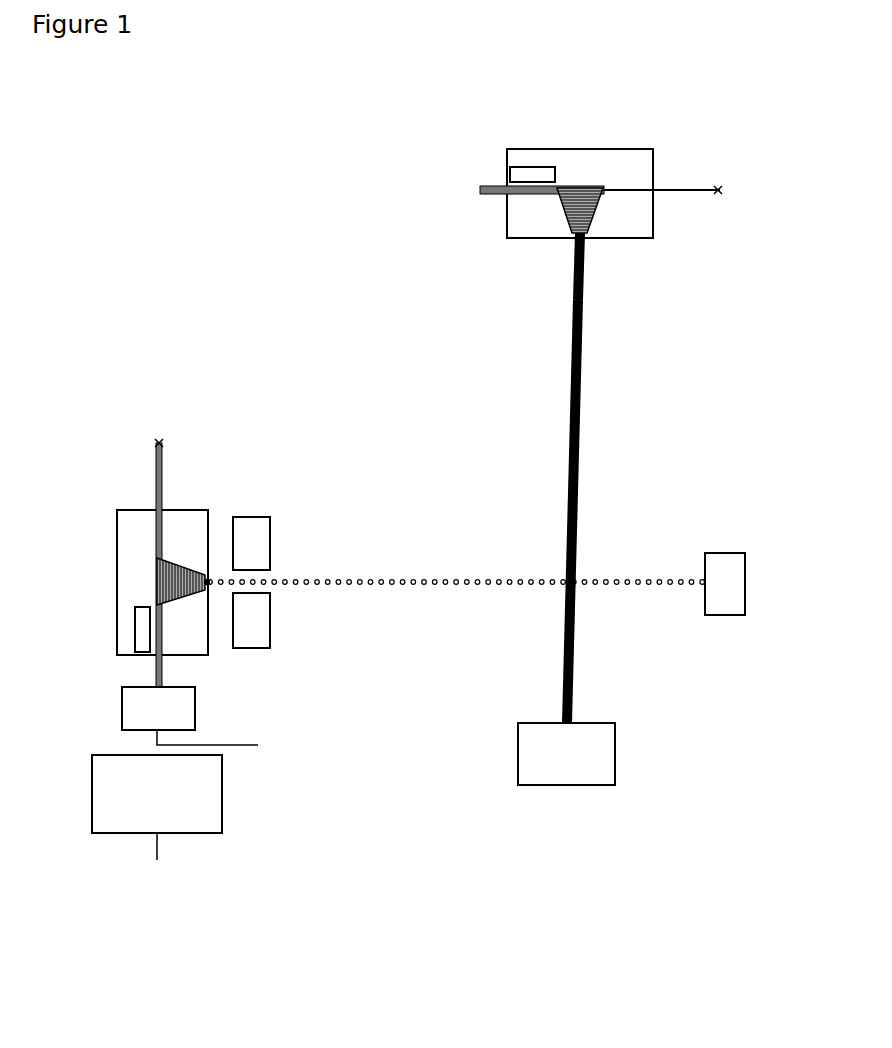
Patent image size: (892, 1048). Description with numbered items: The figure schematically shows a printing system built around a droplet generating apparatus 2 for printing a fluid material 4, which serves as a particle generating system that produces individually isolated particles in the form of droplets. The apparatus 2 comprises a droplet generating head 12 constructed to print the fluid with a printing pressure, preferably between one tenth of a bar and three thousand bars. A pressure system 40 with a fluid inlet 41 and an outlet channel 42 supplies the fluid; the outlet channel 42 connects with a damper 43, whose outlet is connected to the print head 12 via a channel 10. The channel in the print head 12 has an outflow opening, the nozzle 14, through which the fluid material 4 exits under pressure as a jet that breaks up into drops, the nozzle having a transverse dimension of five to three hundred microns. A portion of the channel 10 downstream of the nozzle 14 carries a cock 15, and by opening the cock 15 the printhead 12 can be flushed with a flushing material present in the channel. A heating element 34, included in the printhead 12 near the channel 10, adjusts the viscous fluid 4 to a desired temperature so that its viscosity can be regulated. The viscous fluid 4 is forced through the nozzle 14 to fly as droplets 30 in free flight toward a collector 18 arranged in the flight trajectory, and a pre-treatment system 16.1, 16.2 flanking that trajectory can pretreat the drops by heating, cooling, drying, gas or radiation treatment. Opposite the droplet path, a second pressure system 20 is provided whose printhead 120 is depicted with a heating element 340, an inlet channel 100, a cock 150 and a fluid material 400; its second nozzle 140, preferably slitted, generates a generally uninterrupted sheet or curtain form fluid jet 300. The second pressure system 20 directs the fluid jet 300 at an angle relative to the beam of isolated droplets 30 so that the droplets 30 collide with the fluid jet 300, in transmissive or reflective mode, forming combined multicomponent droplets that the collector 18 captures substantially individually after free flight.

The droplet generating apparatus 2 is at (139, 552).
The fluid material 4 is at (185, 565).
The channel 10 is at (155, 672).
The droplet generating head 12 is at (117, 563).
The nozzle 14 is at (208, 575).
The cock 15 is at (157, 443).
The pre-treatment system 16.1 is at (250, 648).
The pre-treatment system 16.2 is at (250, 517).
The collector 18 is at (720, 597).
The second pressure system 20 is at (617, 164).
The droplets 30 is at (418, 588).
The heating element 34 is at (138, 630).
The pressure system 40 is at (208, 800).
The fluid inlet 41 is at (158, 852).
The outlet channel 42 is at (209, 757).
The damper 43 is at (122, 698).
The inlet channel 100 is at (488, 186).
The printhead 120 is at (600, 148).
The second nozzle 140 is at (586, 241).
The cock 150 is at (718, 186).
The fluid jet 300 is at (582, 410).
The heating element 340 is at (536, 167).
The fluid material 400 is at (598, 212).